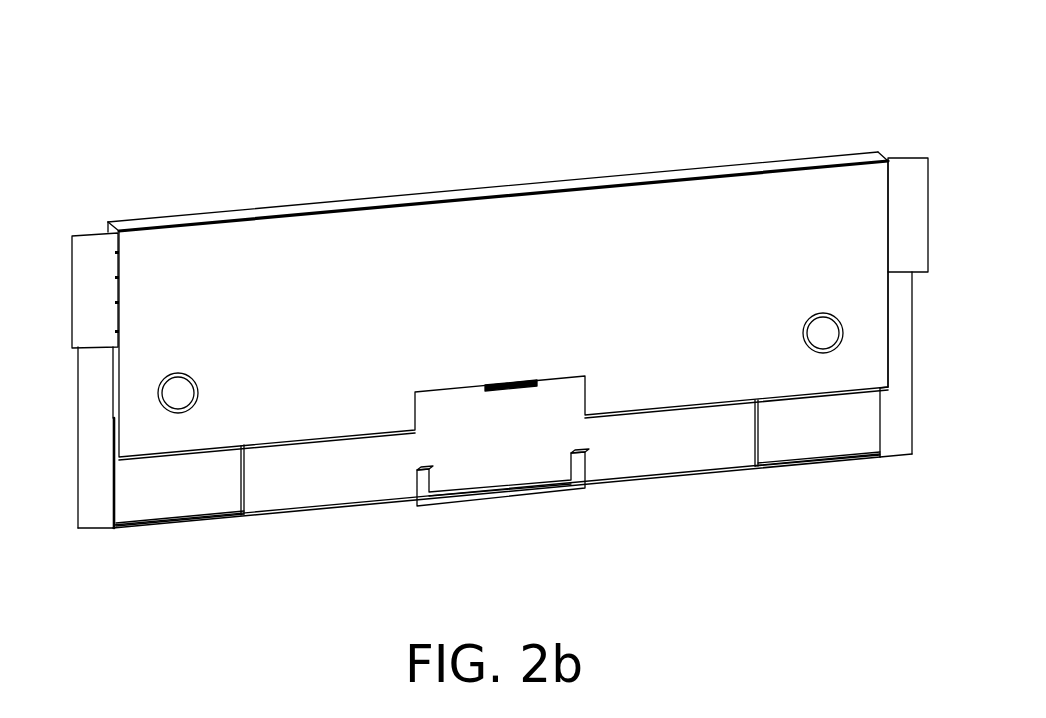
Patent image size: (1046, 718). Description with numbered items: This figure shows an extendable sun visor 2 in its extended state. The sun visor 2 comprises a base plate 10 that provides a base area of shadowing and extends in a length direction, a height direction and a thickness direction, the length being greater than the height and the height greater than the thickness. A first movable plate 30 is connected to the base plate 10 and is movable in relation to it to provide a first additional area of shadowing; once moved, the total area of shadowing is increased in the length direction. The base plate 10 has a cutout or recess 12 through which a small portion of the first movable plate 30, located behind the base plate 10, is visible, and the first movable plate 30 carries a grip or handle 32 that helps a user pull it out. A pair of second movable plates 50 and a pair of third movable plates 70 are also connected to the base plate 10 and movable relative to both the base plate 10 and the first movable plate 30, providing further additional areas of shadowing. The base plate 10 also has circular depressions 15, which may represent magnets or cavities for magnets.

The extendable sun visor 2 is at (269, 102).
The base plate 10 is at (320, 325).
The cutout or recess 12 is at (585, 395).
The circular depressions 15 is at (178, 393).
The first movable plate 30 is at (658, 443).
The grip or handle 32 is at (500, 492).
The second movable plates 50 is at (97, 263).
The third movable plates 70 is at (93, 485).